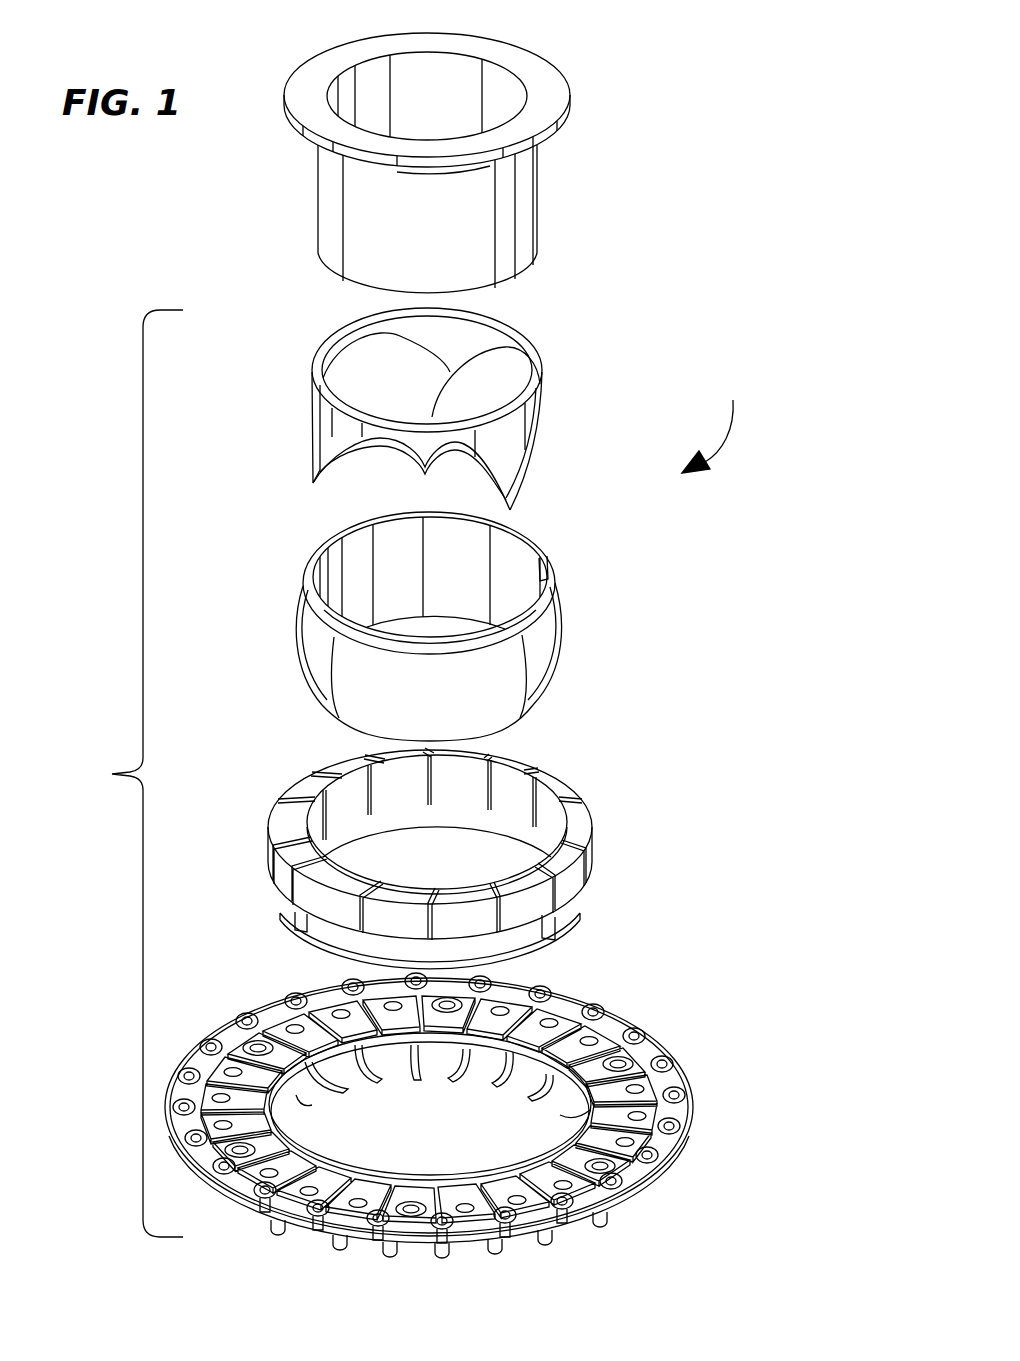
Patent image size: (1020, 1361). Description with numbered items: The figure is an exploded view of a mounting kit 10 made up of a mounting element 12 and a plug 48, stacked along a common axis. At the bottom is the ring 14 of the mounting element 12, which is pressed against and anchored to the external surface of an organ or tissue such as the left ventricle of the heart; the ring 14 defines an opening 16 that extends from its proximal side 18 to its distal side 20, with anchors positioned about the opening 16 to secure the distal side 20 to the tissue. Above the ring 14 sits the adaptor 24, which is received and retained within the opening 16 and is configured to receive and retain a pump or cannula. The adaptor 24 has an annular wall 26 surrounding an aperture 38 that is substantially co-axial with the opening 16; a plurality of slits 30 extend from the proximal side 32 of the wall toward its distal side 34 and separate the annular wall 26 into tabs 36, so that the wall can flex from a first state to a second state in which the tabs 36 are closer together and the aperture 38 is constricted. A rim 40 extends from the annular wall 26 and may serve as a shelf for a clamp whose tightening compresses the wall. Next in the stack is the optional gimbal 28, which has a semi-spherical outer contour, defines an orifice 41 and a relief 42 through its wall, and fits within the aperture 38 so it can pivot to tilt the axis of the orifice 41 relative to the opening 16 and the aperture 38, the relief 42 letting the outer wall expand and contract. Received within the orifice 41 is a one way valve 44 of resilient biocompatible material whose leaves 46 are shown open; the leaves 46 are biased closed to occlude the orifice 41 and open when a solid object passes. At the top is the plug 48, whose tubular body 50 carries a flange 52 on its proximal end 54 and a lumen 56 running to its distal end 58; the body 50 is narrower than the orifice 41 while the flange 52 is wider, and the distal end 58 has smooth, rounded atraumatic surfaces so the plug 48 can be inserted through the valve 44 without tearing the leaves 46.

The mounting kit 10 is at (715, 420).
The mounting element 12 is at (130, 773).
The ring 14 is at (685, 1082).
The opening 16 is at (430, 1106).
The proximal side 18 is at (610, 1010).
The distal side 20 is at (620, 1195).
The adaptor 24 is at (582, 820).
The annular wall 26 is at (585, 885).
The gimbal 28 is at (552, 632).
The slits 30 is at (295, 895).
The proximal side 32 is at (535, 768).
The distal side 34 is at (527, 948).
The tabs 36 is at (335, 775).
The aperture 38 is at (437, 850).
The rim 40 is at (588, 862).
The orifice 41 is at (418, 625).
The relief 42 is at (545, 562).
The one way valve 44 is at (543, 385).
The leaves 46 is at (505, 365).
The plug 48 is at (537, 176).
The body 50 is at (330, 181).
The flange 52 is at (540, 80).
The proximal end 54 is at (293, 78).
The lumen 56 is at (425, 122).
The distal end 58 is at (345, 280).